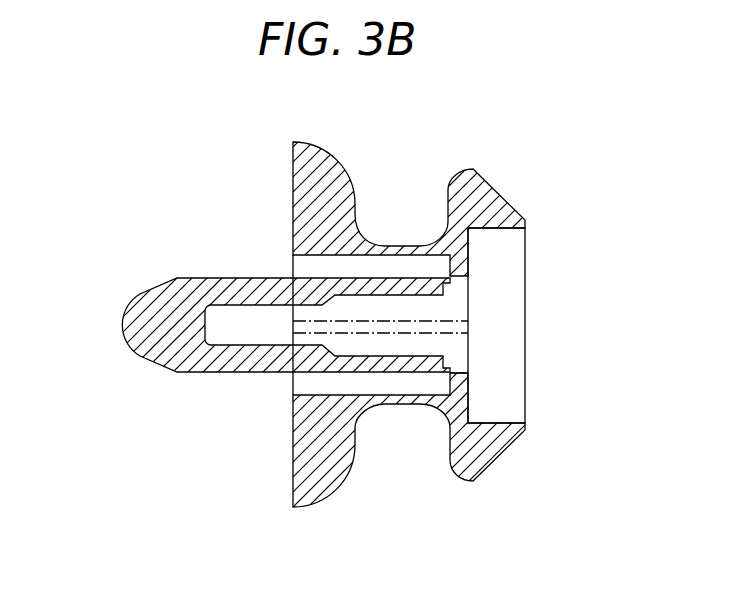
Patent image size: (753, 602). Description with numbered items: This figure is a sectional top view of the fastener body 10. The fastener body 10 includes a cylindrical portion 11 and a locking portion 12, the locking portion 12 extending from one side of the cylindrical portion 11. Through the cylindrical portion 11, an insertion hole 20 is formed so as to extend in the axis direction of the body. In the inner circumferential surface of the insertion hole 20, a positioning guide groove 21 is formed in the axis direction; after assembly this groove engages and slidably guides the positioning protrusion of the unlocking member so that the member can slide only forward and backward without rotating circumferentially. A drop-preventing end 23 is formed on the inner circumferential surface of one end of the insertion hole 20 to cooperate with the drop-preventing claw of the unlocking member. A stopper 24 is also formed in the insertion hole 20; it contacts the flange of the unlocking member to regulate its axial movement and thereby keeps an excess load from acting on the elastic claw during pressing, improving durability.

The fastener body 10 is at (376, 323).
The cylindrical portion 11 is at (376, 323).
The locking portion 12 is at (123, 330).
The insertion hole 20 is at (519, 332).
The positioning guide groove 21 is at (397, 320).
The drop-preventing end 23 is at (452, 382).
The stopper 24 is at (468, 404).